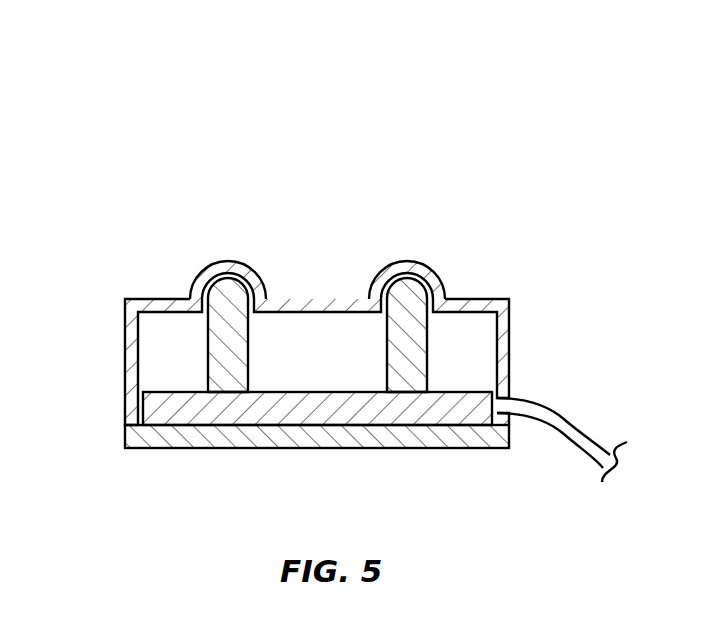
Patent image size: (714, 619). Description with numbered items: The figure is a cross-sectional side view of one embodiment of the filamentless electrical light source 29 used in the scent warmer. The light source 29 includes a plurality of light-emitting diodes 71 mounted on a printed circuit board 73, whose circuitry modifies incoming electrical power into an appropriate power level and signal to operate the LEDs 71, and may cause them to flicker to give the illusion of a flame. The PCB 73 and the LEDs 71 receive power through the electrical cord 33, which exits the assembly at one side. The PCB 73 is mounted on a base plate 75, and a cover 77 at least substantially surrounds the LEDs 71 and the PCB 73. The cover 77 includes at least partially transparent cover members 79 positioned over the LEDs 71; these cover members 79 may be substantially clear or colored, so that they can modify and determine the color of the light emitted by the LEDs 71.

The filamentless electrical light source 29 is at (325, 146).
The electrical cord 33 is at (567, 417).
The light-emitting diode 71 is at (433, 292).
The printed circuit board 73 is at (170, 392).
The base plate 75 is at (267, 440).
The cover 77 is at (162, 298).
The at least partially transparent cover member 79 is at (388, 262).